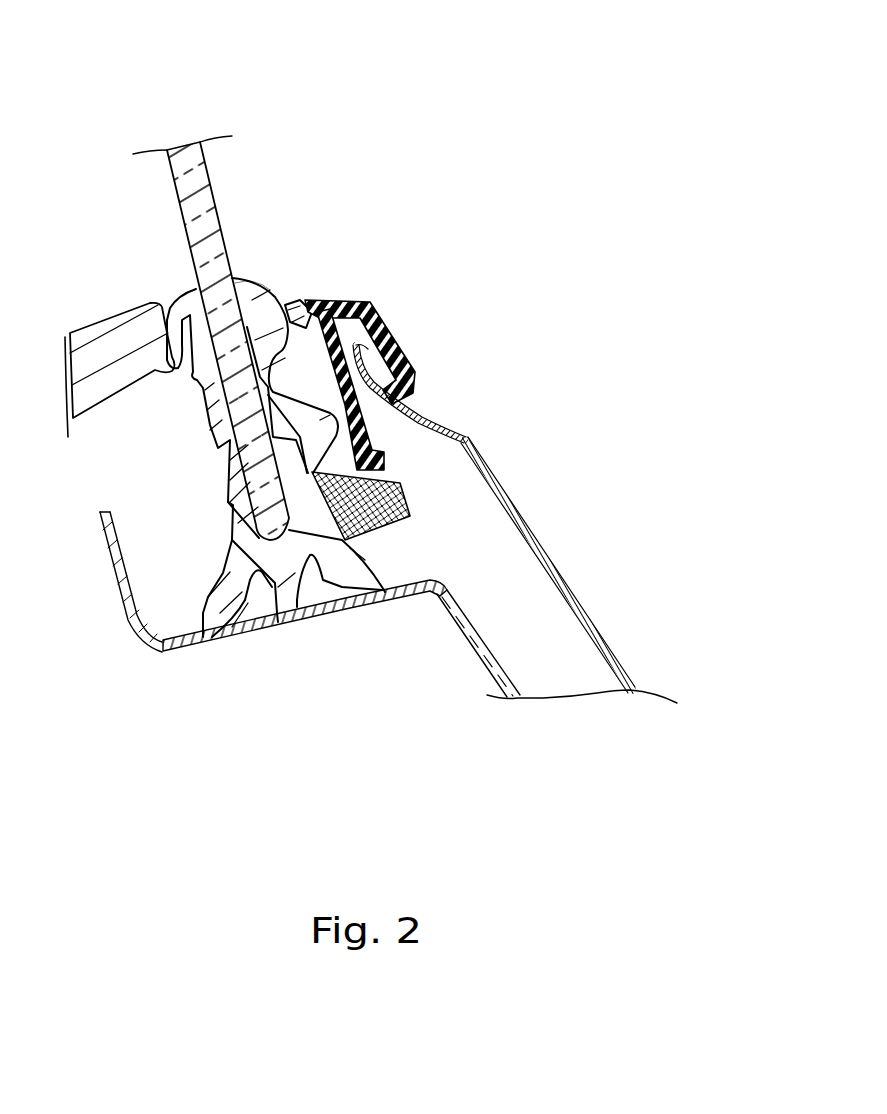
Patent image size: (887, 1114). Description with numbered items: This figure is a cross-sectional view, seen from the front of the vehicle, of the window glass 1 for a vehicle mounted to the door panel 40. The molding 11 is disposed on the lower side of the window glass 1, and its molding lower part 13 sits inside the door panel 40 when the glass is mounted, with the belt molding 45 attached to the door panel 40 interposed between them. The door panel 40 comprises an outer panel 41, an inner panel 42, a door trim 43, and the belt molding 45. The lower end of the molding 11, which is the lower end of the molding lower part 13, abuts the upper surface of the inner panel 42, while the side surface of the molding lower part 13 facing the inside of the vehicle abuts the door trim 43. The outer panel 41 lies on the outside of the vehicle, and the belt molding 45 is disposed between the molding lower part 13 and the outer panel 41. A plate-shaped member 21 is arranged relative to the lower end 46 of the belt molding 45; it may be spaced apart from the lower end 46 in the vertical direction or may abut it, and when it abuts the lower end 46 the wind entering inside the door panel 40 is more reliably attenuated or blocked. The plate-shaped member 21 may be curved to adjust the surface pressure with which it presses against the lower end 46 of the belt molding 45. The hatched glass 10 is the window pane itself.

The window glass for a vehicle 1 is at (130, 100).
The window glass 10 is at (203, 208).
The molding 11 is at (252, 285).
The molding lower part 13 is at (268, 282).
The plate-shaped member 21 is at (430, 462).
The door panel 40 is at (630, 364).
The outer panel 41 is at (533, 527).
The inner panel 42 is at (163, 652).
The door trim 43 is at (98, 343).
The belt molding 45 is at (393, 330).
The lower end of the belt molding 46 is at (413, 452).